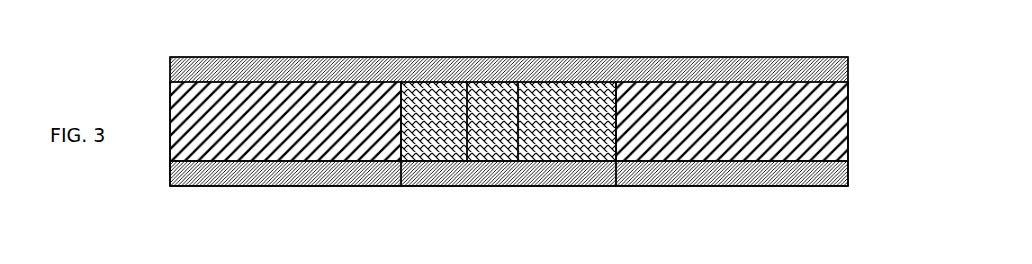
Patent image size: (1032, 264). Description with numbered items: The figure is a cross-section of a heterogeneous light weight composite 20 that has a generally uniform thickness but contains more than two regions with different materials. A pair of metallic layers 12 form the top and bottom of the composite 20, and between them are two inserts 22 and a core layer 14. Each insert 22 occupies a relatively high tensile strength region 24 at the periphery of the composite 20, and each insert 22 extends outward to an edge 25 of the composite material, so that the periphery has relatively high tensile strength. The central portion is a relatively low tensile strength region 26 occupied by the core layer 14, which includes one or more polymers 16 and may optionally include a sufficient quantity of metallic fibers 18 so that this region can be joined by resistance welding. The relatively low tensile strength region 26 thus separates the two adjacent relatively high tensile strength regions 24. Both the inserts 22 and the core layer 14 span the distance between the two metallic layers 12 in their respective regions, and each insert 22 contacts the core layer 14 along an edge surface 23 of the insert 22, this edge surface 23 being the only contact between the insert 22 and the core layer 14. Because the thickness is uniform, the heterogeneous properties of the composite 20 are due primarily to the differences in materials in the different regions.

The metallic layer 12 is at (360, 66).
The core layer 14 is at (419, 82).
The polymer 16 is at (467, 81).
The metallic fiber 18 is at (519, 82).
The heterogeneous light weight composite 20 is at (629, 24).
The insert 22 is at (207, 167).
The edge surface 23 is at (378, 122).
The relatively high tensile strength region 24 is at (264, 180).
The edge 25 is at (170, 112).
The relatively low tensile strength region 26 is at (523, 176).